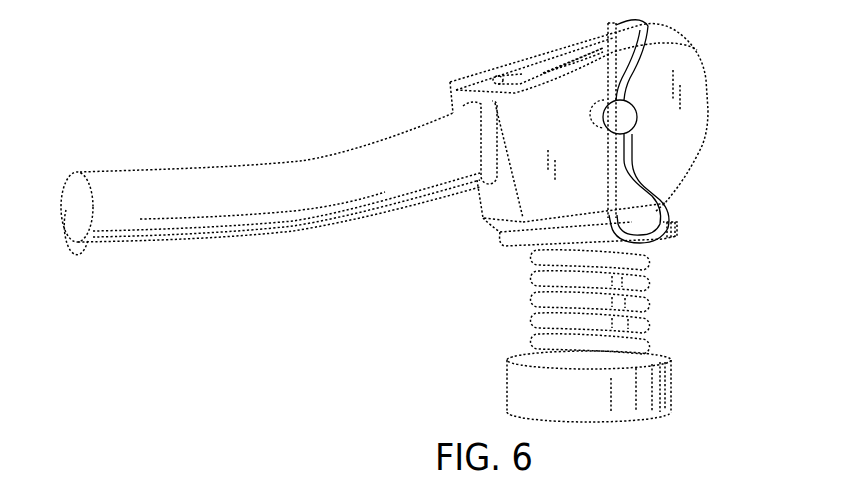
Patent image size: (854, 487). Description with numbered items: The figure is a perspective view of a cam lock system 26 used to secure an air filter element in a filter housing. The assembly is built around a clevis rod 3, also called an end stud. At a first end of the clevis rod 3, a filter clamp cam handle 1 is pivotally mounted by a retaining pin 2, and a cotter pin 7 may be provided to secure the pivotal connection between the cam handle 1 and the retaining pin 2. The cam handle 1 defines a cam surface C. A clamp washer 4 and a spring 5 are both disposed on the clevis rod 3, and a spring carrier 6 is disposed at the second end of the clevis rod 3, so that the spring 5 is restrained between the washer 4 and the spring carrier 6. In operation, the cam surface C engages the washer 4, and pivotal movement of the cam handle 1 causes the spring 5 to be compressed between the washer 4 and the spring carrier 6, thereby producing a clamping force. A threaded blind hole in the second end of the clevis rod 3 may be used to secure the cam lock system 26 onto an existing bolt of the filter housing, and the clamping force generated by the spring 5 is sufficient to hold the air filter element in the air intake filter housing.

The cam lock system 26 is at (320, 92).
The filter clamp cam handle 1 is at (237, 235).
The cam surface C is at (708, 108).
The retaining pin 2 is at (637, 118).
The cotter pin 7 is at (672, 217).
The clamp washer 4 is at (678, 233).
The clevis rod 3 is at (627, 295).
The spring 5 is at (530, 295).
The spring carrier 6 is at (507, 392).